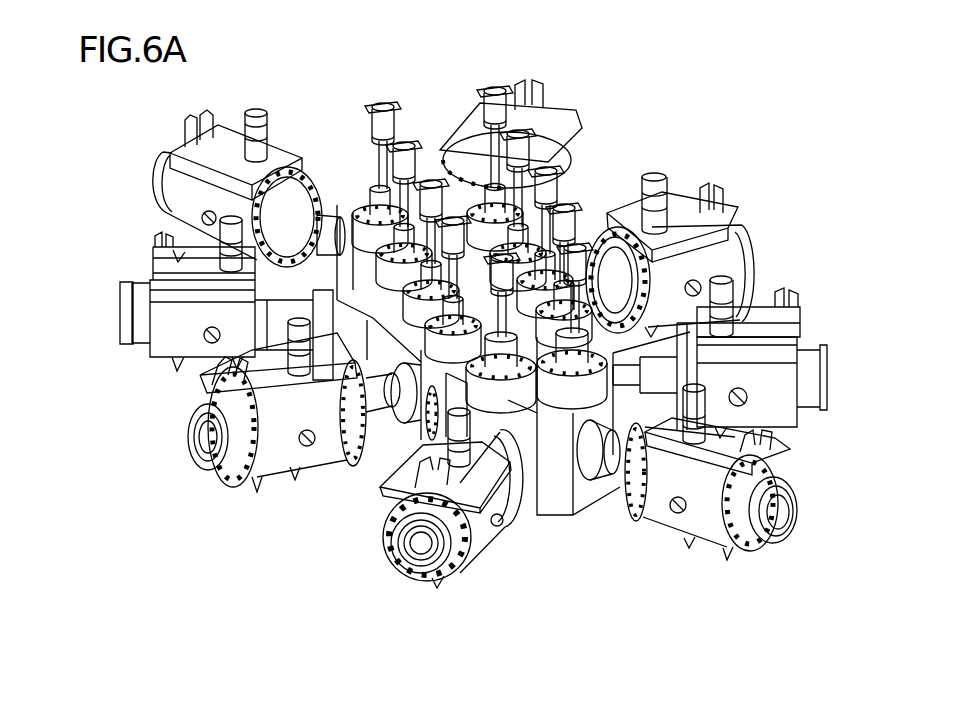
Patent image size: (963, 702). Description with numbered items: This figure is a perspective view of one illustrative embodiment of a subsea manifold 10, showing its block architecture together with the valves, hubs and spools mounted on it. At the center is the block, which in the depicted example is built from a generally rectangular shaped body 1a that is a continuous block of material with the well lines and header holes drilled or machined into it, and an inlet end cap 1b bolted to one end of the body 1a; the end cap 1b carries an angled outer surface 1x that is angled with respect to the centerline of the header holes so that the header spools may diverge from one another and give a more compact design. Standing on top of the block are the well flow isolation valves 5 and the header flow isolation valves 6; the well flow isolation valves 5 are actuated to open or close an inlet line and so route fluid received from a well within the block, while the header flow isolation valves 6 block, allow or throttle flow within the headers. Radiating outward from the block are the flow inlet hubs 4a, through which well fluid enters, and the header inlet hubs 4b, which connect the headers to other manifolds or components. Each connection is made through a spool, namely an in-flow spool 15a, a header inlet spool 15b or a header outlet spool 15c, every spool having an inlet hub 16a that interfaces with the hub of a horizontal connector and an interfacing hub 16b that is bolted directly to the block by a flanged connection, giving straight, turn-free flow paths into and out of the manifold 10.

The manifold 10 is at (789, 271).
The body 1a is at (353, 377).
The inlet end cap 1b is at (407, 400).
The angled outer surface 1x is at (582, 493).
The flow inlet hub 4a is at (729, 176).
The header inlet hub 4b is at (368, 538).
The well flow isolation valve 5 is at (382, 102).
The header flow isolation valve 6 is at (565, 385).
The spool 15a is at (138, 345).
The header inlet spool 15b is at (740, 557).
The header outlet spool 15c is at (287, 213).
The inlet hub 16a is at (454, 430).
The interfacing hub 16b is at (195, 181).